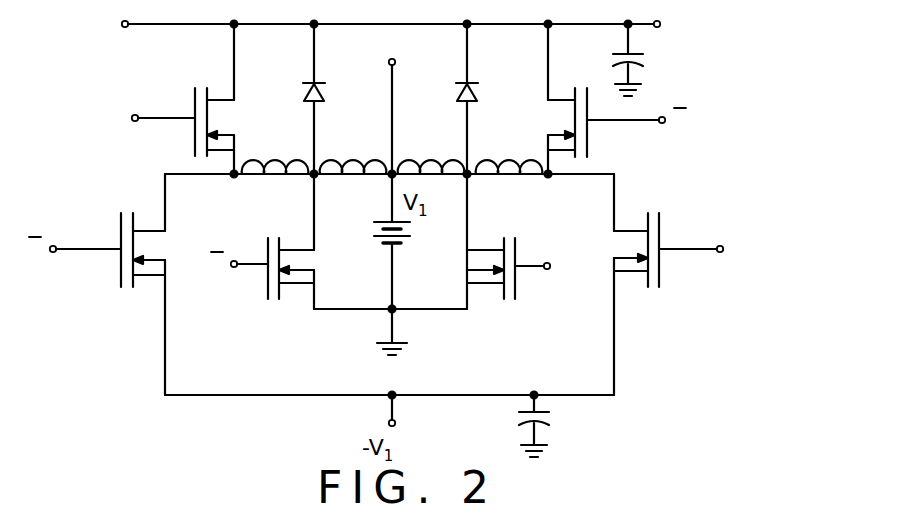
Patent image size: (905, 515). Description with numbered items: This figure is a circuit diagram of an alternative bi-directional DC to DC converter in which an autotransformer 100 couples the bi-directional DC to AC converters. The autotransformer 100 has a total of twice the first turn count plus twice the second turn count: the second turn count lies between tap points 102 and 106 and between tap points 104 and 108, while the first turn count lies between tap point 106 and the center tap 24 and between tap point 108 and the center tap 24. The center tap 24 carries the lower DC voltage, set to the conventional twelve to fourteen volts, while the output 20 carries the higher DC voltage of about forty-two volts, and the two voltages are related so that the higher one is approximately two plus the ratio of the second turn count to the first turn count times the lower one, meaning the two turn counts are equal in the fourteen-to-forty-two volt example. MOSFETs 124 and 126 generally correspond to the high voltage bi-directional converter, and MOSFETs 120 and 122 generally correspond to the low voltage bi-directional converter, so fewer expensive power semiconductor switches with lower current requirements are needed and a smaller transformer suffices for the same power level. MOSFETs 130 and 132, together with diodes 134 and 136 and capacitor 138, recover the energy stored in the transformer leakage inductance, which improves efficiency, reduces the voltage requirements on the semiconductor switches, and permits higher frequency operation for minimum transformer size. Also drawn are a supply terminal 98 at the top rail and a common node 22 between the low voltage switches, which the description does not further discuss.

The output 20 is at (660, 30).
The common source node to ground 22 is at (316, 280).
The center tap 24 is at (389, 60).
The supply input terminal 98 is at (121, 29).
The autotransformer 100 is at (387, 186).
The tap point 102 is at (236, 178).
The tap point 104 is at (552, 178).
The tap point 106 is at (316, 177).
The tap point 108 is at (470, 177).
The MOSFET 120 is at (268, 284).
The MOSFET 122 is at (518, 287).
The MOSFET 124 is at (196, 146).
The MOSFET 126 is at (588, 142).
The MOSFET 130 is at (122, 268).
The MOSFET 132 is at (660, 276).
The diode 134 is at (305, 91).
The diode 136 is at (476, 92).
The capacitor 138 is at (548, 418).